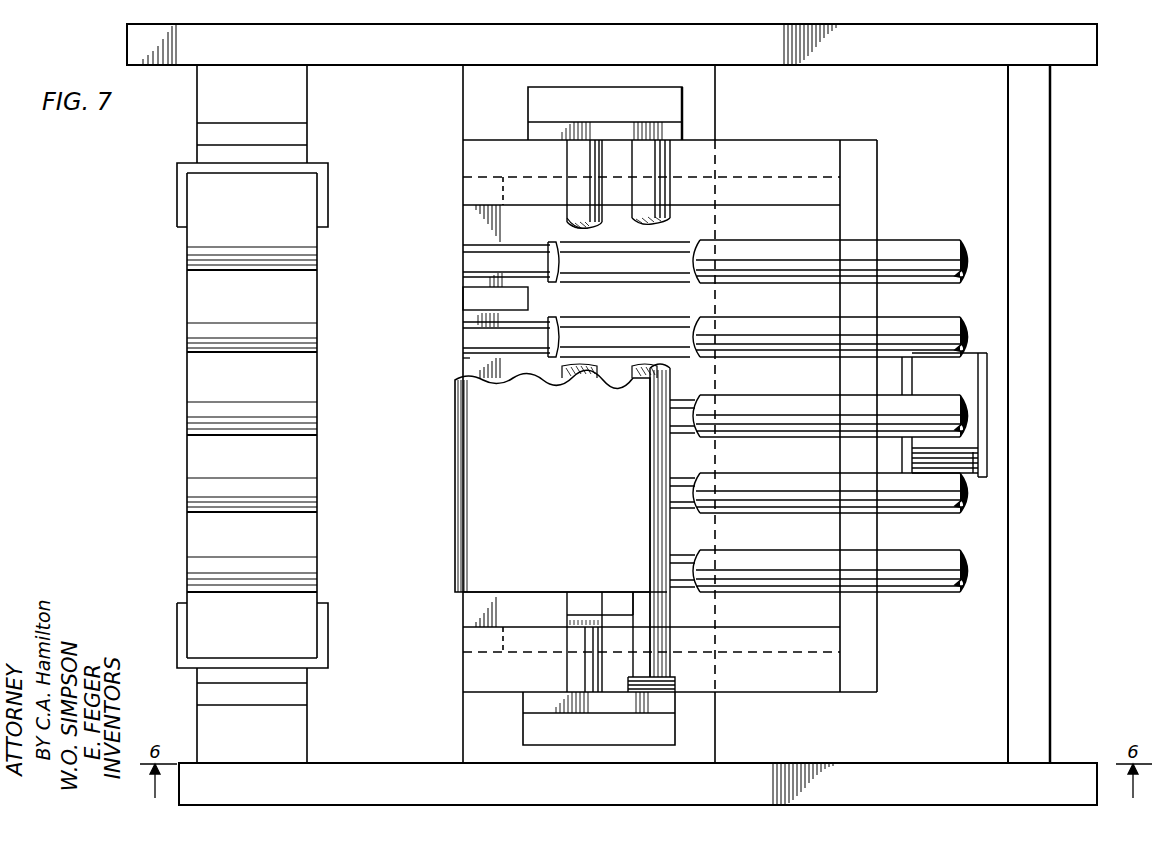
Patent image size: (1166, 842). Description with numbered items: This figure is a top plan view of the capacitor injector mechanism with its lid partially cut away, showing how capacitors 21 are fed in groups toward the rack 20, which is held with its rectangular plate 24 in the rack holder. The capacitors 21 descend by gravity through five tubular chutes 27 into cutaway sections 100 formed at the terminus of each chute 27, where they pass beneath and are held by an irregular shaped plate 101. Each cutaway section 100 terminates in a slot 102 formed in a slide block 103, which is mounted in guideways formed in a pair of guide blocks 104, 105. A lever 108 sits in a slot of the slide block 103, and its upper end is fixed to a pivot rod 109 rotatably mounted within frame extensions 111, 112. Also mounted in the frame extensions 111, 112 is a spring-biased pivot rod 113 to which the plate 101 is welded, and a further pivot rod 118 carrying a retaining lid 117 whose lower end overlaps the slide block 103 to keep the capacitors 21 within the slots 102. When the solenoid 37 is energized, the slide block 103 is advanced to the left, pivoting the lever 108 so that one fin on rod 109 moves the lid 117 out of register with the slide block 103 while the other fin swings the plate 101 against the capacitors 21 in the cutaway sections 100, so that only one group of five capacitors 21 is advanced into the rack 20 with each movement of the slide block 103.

The rack 20 is at (328, 194).
The capacitors 21 is at (205, 492).
The rectangular plate 24 is at (295, 445).
The gravity feed tubular chutes 27 is at (946, 250).
The solenoid 37 is at (972, 476).
The cutaway sections 100 is at (683, 262).
The irregular shaped plate 101 is at (610, 372).
The slot 102 is at (478, 338).
The slide block 103 is at (468, 369).
The guide block 104 is at (475, 665).
The guide block 105 is at (482, 188).
The lever 108 is at (622, 618).
The pivot rod 109 is at (575, 215).
The frame extension 111 is at (532, 705).
The frame extension 112 is at (550, 128).
The spring-biased pivot rod 113 is at (668, 183).
The retaining lid 117 is at (480, 573).
The pivot rod 118 is at (644, 164).